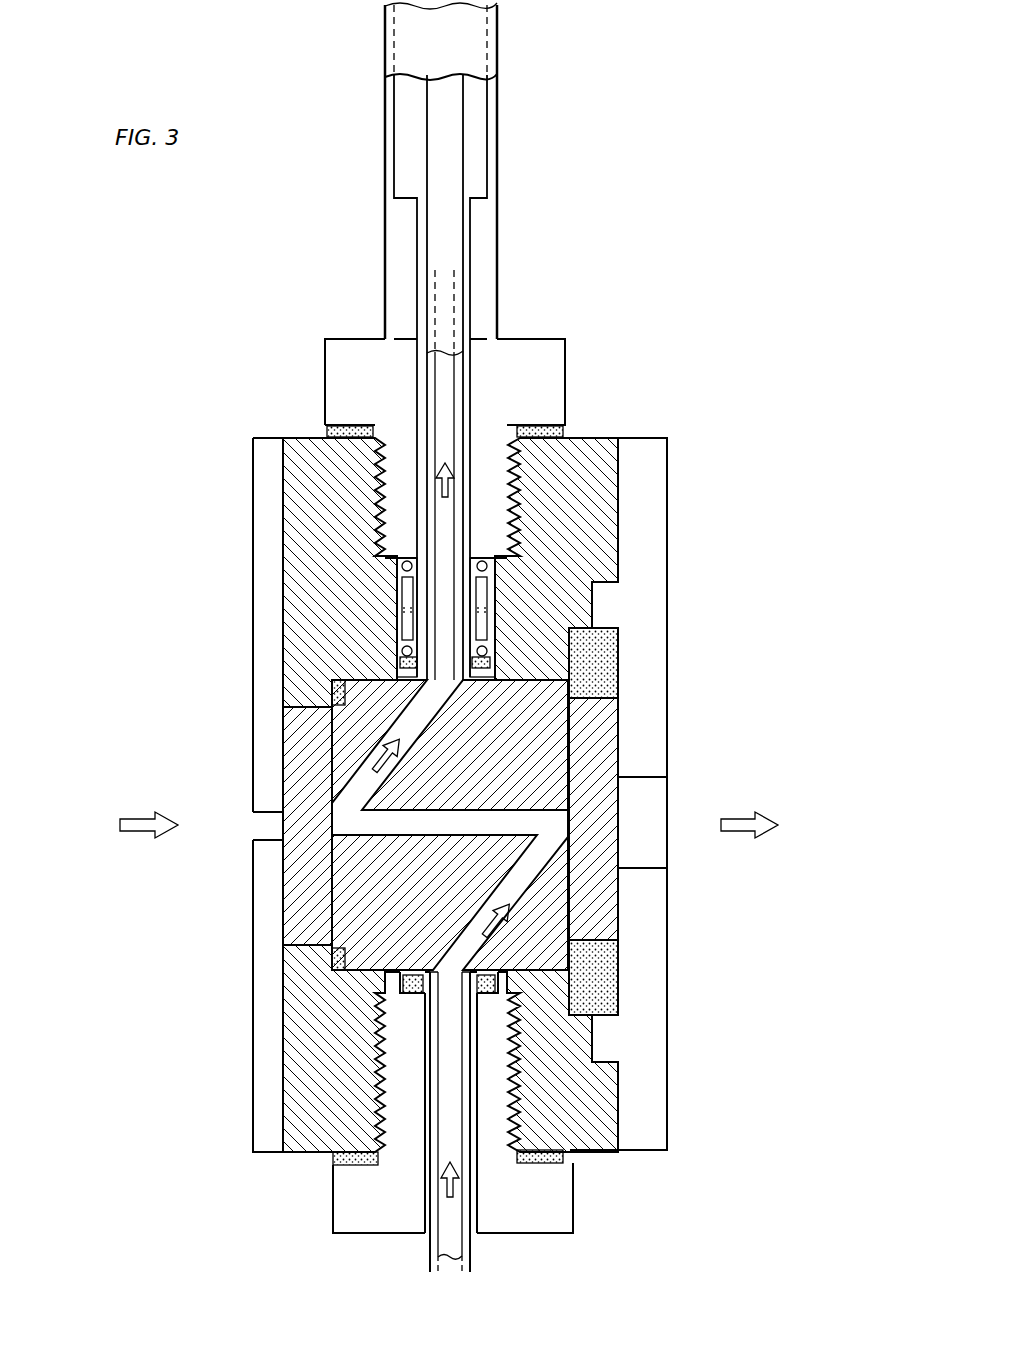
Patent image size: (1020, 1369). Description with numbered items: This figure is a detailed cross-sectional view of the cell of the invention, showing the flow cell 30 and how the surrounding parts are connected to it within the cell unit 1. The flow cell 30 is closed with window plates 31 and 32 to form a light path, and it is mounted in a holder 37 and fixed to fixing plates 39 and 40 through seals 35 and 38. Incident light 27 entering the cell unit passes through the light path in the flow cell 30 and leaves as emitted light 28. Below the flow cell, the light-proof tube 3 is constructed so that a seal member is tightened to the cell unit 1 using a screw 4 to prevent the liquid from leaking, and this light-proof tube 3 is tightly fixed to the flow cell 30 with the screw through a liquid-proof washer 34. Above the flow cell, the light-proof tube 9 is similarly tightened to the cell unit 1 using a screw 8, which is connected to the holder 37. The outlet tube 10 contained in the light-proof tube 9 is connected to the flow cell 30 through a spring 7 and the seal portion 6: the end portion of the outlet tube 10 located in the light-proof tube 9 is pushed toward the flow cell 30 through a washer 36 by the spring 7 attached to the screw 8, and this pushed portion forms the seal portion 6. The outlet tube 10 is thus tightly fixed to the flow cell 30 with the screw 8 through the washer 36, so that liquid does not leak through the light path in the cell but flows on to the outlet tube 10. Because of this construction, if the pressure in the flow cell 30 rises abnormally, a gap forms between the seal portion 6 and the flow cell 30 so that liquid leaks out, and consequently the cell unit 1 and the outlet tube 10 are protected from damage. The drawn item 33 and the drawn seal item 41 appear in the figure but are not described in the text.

The cell unit 1 is at (270, 437).
The light-proof tube 3 is at (440, 1262).
The screw 4 is at (572, 1200).
The seal portion 6 is at (593, 627).
The spring 7 is at (395, 566).
The screw 8 is at (567, 360).
The light-proof tube 9 is at (500, 117).
The outlet tube 10 is at (465, 172).
The incident light 27 is at (125, 812).
The emitted light 28 is at (750, 812).
The flow cell 30 is at (345, 723).
The window plate 31 is at (283, 887).
The window plate 32 is at (622, 848).
The lower body part 33 is at (333, 1165).
The liquid-proof washer 34 is at (405, 985).
The seal 35 is at (335, 950).
The washer 36 is at (400, 660).
The holder 37 is at (597, 487).
The seal 38 is at (620, 658).
The fixing plate 39 is at (262, 1008).
The fixing plate 40 is at (650, 735).
The upper seal 41 is at (568, 432).